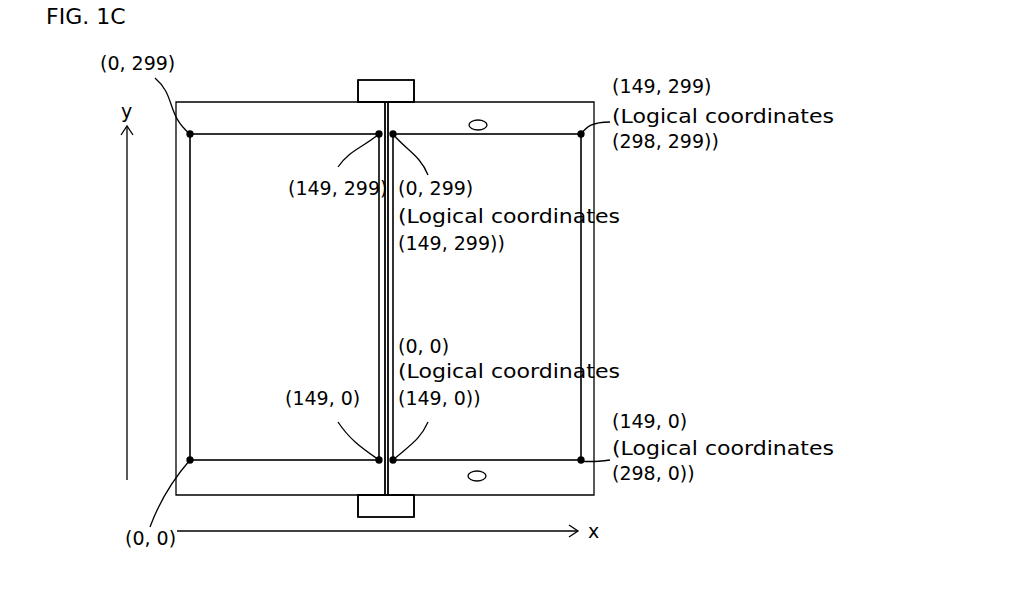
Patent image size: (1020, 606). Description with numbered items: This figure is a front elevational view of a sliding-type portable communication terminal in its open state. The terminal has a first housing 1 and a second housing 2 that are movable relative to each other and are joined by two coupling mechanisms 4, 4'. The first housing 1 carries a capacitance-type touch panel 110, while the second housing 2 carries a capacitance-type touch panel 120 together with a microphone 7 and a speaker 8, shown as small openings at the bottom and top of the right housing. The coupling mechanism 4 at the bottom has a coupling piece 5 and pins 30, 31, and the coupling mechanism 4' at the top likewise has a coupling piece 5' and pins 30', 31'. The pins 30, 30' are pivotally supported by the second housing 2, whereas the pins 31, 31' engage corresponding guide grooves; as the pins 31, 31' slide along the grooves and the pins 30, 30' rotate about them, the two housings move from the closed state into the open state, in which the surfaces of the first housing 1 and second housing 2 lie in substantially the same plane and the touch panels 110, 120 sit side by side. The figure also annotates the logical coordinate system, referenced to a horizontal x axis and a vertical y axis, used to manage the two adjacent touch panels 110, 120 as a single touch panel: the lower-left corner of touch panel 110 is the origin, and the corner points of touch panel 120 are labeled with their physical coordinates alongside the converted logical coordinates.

The first housing 1 is at (284, 483).
The second housing 2 is at (583, 481).
The coupling mechanism 4 is at (365, 533).
The coupling mechanism 4' is at (363, 58).
The coupling piece 5 is at (386, 533).
The coupling piece 5' is at (386, 65).
The microphone 7 is at (477, 481).
The speaker 8 is at (478, 120).
The pin 30 is at (399, 538).
The pin 30' is at (405, 58).
The pin 31 is at (385, 538).
The pin 31' is at (384, 58).
The touch panel 110 is at (255, 175).
The touch panel 120 is at (560, 307).